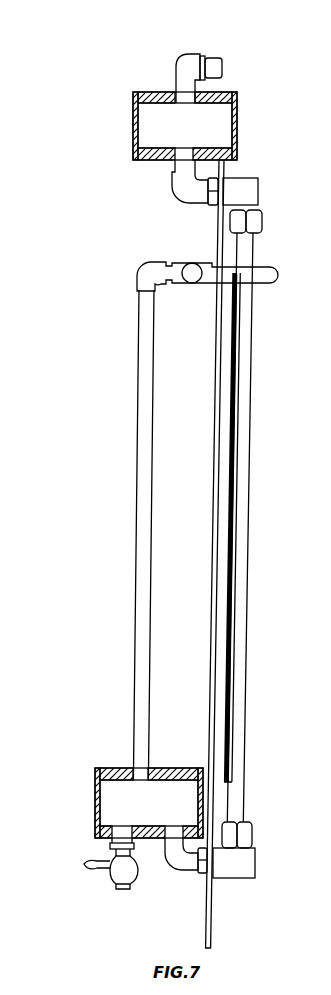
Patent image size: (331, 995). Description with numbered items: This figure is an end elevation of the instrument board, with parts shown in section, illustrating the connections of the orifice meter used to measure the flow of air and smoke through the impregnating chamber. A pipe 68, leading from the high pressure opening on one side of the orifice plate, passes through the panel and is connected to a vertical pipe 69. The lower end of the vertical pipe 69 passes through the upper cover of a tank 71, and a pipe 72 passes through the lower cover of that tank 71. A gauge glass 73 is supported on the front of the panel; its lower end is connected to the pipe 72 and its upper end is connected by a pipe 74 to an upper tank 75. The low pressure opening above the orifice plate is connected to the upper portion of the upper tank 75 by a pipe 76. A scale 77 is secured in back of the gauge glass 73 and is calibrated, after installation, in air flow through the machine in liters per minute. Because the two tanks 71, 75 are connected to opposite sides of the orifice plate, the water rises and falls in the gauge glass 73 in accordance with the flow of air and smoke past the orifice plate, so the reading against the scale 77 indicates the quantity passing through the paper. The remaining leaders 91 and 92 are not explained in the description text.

The pipe 68 is at (268, 270).
The vertical pipe 69 is at (150, 490).
The tank 71 is at (110, 790).
The pipe 72 is at (243, 862).
The gauge glass 73 is at (235, 447).
The pipe 74 is at (240, 186).
The upper tank 75 is at (222, 120).
The pipe 76 is at (210, 68).
The scale 77 is at (330, 566).
The connection line 91 is at (330, 40).
The connection line 92 is at (330, 138).